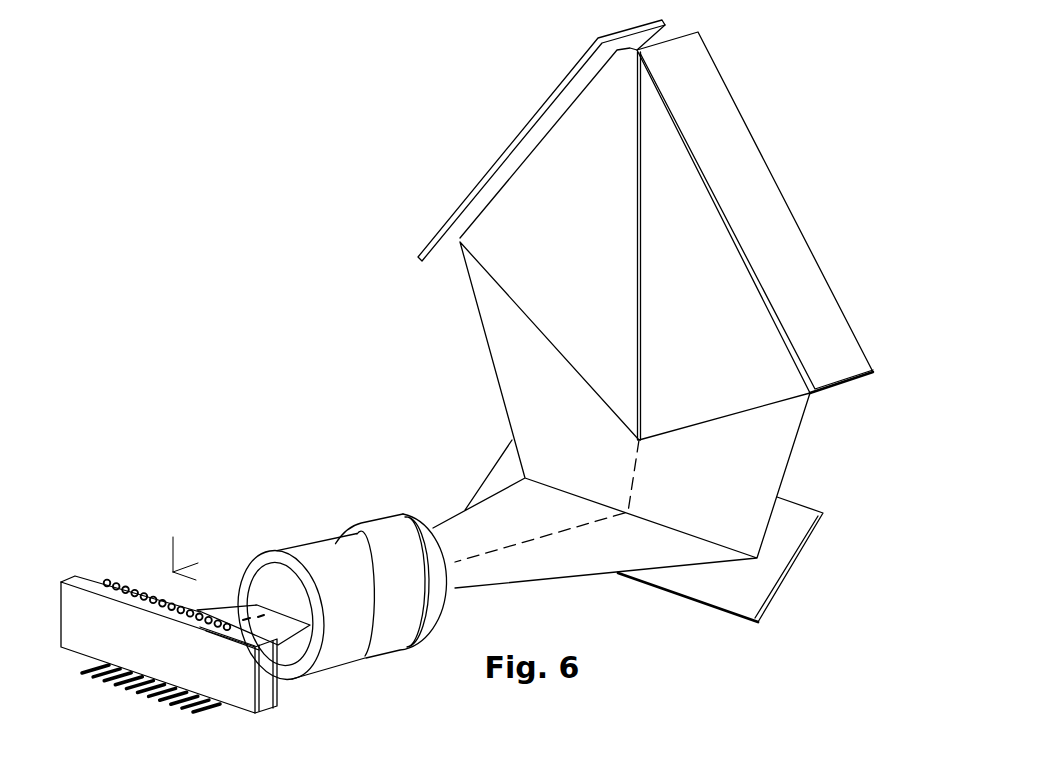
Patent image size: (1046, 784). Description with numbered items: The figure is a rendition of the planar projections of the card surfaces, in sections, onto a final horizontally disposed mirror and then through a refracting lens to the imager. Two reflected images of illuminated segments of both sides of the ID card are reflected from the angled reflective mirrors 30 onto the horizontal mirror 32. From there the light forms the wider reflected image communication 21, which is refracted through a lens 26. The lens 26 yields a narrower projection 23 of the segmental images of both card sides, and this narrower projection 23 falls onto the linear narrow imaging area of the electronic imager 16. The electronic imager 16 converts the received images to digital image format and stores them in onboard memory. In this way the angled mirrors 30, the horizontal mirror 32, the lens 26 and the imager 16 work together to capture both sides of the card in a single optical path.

The electronic imager 16 is at (75, 598).
The reflected image communication 21 is at (493, 242).
The narrower projection 23 is at (278, 627).
The lens 26 is at (335, 548).
The angled reflective mirrors 30 is at (513, 133).
The horizontal mirror 32 is at (730, 583).